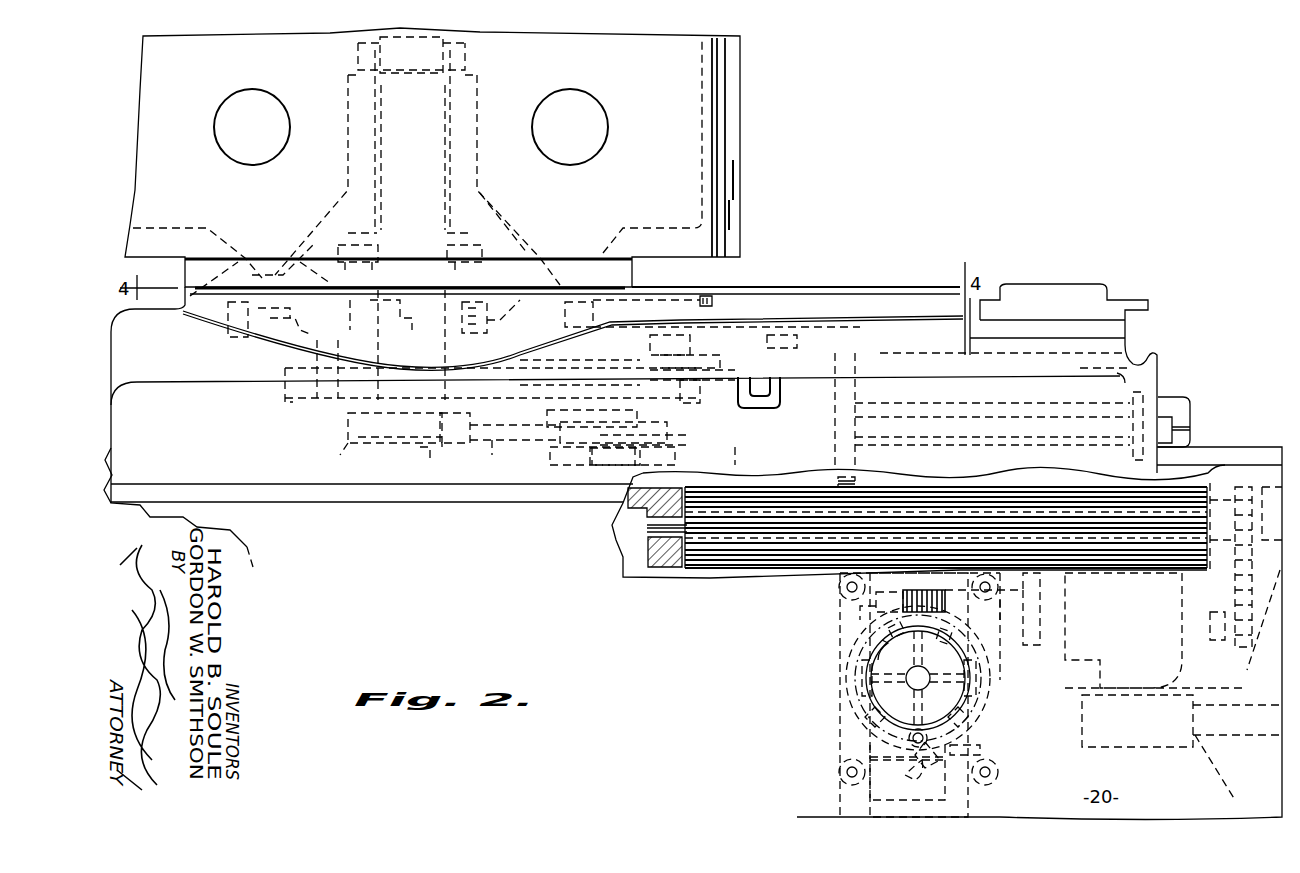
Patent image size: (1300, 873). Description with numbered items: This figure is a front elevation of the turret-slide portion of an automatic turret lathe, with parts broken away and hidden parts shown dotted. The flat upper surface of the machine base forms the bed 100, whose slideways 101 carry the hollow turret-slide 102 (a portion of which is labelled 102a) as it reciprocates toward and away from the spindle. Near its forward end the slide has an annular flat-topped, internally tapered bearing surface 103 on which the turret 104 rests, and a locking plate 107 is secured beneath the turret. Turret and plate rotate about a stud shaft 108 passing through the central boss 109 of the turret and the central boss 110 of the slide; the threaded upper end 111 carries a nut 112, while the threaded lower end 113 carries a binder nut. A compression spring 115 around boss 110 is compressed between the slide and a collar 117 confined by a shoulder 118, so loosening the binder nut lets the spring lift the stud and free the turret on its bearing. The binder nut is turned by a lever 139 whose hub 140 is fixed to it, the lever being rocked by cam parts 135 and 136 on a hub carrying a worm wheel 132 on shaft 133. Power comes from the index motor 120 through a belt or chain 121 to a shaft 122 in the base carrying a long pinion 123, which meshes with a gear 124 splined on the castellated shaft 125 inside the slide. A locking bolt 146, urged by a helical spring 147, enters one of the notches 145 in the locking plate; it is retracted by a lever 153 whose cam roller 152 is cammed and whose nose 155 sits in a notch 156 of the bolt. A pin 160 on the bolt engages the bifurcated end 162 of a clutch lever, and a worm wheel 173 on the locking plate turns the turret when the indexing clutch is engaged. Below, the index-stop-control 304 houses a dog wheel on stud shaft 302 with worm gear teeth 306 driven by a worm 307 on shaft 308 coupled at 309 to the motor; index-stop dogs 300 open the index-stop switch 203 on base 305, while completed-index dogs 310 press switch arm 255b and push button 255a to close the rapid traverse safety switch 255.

The bed 100 is at (668, 587).
The slideways 101 is at (111, 457).
The turret-slide 102 is at (1092, 369).
The clamp member portion 102a is at (675, 460).
The bearing surface 103 is at (557, 258).
The turret 104 is at (740, 78).
The locking plate 107 is at (283, 305).
The stud shaft 108 is at (445, 137).
The central boss 109 is at (477, 100).
The central boss 110 is at (388, 305).
The upper end 111 is at (443, 45).
The nut 112 is at (465, 66).
The lower end 113 is at (425, 458).
The compression spring 115 is at (487, 300).
The collar 117 is at (478, 265).
The shoulder 118 is at (402, 268).
The index motor 120 is at (1205, 700).
The belt or chain 121 is at (1228, 495).
The shaft 122 is at (610, 532).
The long pinion 123 is at (785, 555).
The gear 124 is at (855, 482).
The castellated shaft 125 is at (927, 405).
The worm wheel 132 is at (700, 400).
The shaft 133 is at (590, 392).
The cam part 135 is at (690, 420).
The cam part 136 is at (660, 440).
The lever 139 is at (498, 455).
The hub 140 is at (350, 456).
The notches 145 is at (552, 336).
The locking bolt 146 is at (640, 297).
The helical compression spring 147 is at (712, 298).
The cam roller 152 is at (700, 373).
The lever 153 is at (700, 355).
The projecting nose 155 is at (690, 340).
The notch 156 is at (647, 318).
The pin 160 is at (786, 360).
The bifurcated end 162 is at (797, 341).
The worm wheel 173 is at (284, 398).
The index-stop-switch 203 is at (912, 745).
The rapid traverse safety switch 255 is at (870, 797).
The push button 255a is at (915, 772).
The switch arm 255b is at (984, 748).
The index-stop dog 300 is at (998, 728).
The stud shaft 302 is at (930, 660).
The index-stop-control 304 is at (858, 700).
The base 305 is at (968, 805).
The worm gear teeth 306 is at (988, 702).
The worm 307 is at (945, 593).
The shaft 308 is at (862, 605).
The coupling 309 is at (1010, 620).
The completed-index dogs 310 is at (990, 676).